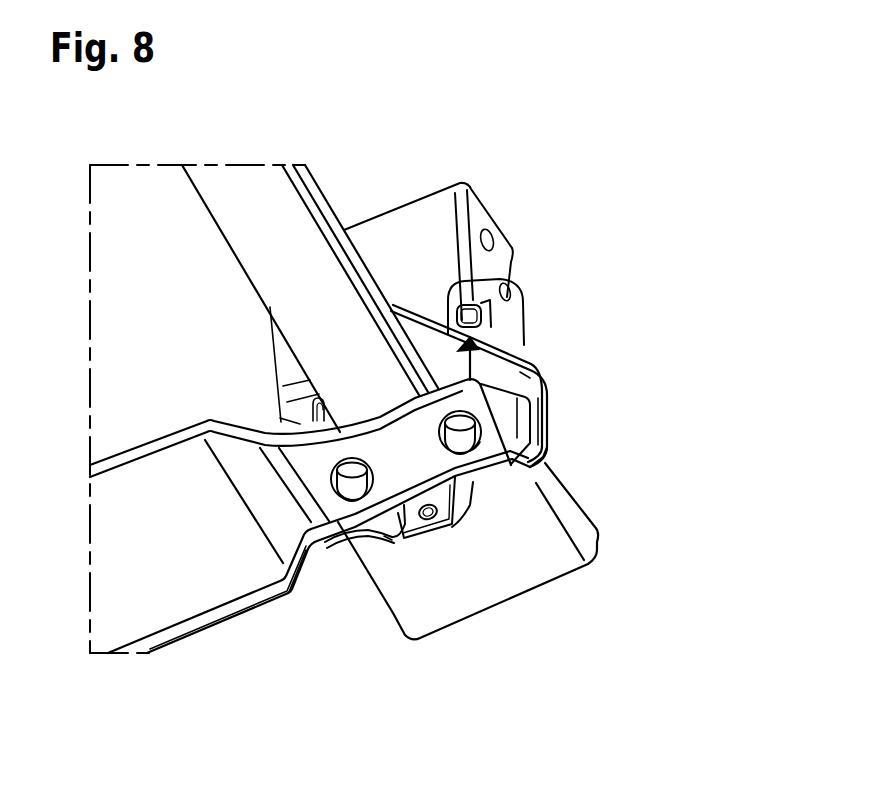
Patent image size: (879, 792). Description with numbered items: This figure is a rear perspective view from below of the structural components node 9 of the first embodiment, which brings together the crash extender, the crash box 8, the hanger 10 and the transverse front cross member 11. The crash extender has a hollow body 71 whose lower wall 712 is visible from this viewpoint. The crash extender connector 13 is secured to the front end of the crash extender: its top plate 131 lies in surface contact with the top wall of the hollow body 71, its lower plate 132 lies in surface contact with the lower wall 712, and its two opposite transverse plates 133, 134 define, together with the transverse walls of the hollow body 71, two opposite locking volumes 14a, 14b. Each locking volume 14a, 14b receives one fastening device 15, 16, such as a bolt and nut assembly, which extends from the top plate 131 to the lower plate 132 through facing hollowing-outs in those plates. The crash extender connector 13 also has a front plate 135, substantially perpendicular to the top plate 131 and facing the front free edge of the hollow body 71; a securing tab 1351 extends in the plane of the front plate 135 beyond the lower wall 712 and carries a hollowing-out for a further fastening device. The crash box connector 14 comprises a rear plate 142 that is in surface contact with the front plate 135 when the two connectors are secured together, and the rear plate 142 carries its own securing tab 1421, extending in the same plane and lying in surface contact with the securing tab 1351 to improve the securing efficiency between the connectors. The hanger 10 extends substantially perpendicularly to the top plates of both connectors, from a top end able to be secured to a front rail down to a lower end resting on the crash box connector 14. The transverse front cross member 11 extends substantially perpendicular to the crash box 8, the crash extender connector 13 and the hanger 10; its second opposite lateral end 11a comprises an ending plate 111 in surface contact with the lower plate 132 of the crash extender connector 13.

The crash box 8 is at (618, 551).
The structural components node 9 is at (564, 246).
The hanger 10 is at (530, 207).
The transverse front cross member 11 is at (195, 655).
The second opposite lateral end 11a is at (317, 572).
The ending plate 111 is at (358, 507).
The crash extender connector 13 is at (557, 420).
The top plate 131 is at (483, 272).
The lower plate 132 is at (547, 450).
The transverse plate 133 is at (530, 372).
The transverse plate 134 is at (280, 418).
The front plate 135 is at (547, 408).
The securing tab 1351 is at (388, 540).
The crash box connector 14 is at (568, 405).
The locking volume 14a is at (492, 315).
The locking volume 14b is at (300, 380).
The rear plate 142 is at (545, 438).
The securing tab 1421 is at (462, 442).
The fastening device 15 is at (352, 492).
The fastening device 16 is at (468, 503).
The hollow body 71 is at (329, 183).
The lower wall 712 is at (262, 268).